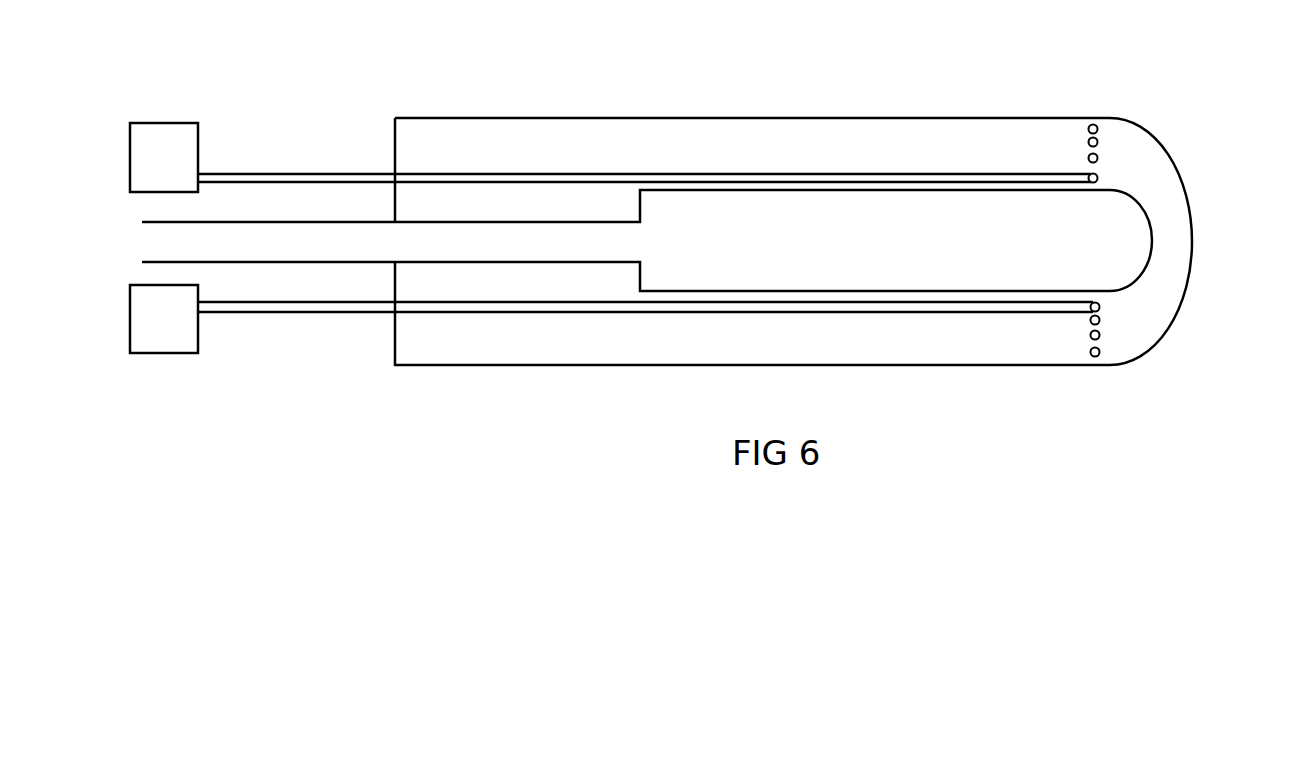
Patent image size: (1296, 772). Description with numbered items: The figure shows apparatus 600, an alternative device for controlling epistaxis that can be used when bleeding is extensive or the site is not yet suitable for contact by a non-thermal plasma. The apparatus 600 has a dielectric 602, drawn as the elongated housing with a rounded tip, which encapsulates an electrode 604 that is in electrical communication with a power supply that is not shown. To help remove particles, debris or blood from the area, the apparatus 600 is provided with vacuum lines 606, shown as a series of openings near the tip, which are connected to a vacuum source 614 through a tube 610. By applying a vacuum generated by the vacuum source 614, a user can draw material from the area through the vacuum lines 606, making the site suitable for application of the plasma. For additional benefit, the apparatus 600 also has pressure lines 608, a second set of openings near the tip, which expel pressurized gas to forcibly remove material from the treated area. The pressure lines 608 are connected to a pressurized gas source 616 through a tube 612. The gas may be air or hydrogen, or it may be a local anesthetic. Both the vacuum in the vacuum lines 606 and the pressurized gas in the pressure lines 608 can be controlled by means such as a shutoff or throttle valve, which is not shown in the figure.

The apparatus 600 is at (818, 44).
The dielectric 602 is at (842, 118).
The electrode 604 is at (1152, 237).
The vacuum lines 606 is at (1103, 145).
The pressure lines 608 is at (1078, 327).
The tube 610 is at (383, 170).
The tube 612 is at (372, 313).
The vacuum source 614 is at (129, 155).
The pressurized gas source 616 is at (129, 317).